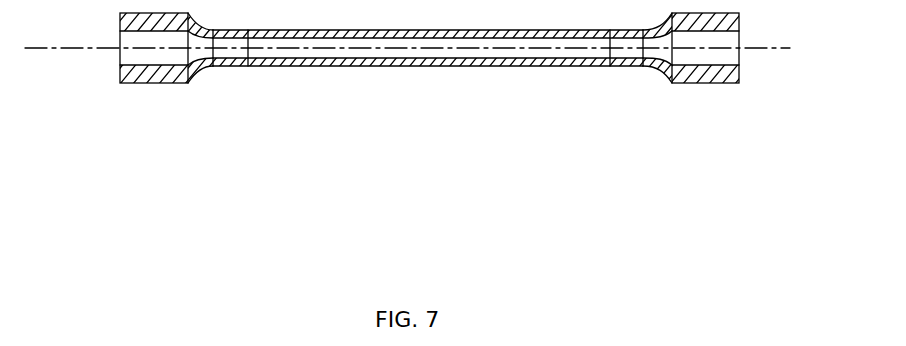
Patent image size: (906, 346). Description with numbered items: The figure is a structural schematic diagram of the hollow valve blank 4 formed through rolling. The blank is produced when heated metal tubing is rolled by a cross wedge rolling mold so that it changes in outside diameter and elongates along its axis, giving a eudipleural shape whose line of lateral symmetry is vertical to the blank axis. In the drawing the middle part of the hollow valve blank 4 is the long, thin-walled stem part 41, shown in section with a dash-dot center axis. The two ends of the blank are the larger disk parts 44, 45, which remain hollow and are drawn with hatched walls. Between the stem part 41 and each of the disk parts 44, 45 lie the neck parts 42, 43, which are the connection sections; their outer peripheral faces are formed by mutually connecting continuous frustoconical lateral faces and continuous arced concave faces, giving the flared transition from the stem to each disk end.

The hollow valve blank 4 is at (298, 193).
The stem part 41 is at (421, 67).
The neck part 42 is at (215, 66).
The neck part 43 is at (637, 68).
The disk part 44 is at (153, 82).
The disk part 45 is at (713, 83).